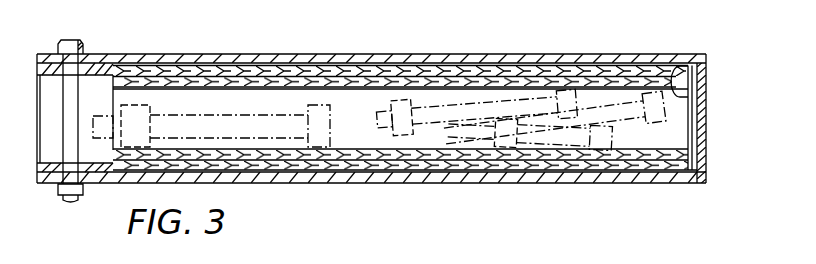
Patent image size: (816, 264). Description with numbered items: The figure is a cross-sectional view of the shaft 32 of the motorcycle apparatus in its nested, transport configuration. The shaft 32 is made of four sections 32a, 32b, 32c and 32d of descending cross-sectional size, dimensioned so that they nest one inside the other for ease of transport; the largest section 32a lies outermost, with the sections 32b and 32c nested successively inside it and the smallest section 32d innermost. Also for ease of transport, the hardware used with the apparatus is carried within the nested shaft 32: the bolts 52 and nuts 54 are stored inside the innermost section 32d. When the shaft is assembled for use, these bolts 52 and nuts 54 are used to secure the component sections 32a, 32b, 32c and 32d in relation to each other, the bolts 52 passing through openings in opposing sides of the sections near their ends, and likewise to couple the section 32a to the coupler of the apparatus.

The shaft 32 is at (403, 36).
The first shaft section 32a is at (598, 54).
The second shaft section 32b is at (655, 60).
The third shaft section 32c is at (704, 62).
The fourth shaft section 32d is at (704, 89).
The bolt 52 is at (437, 110).
The nut 54 is at (140, 140).